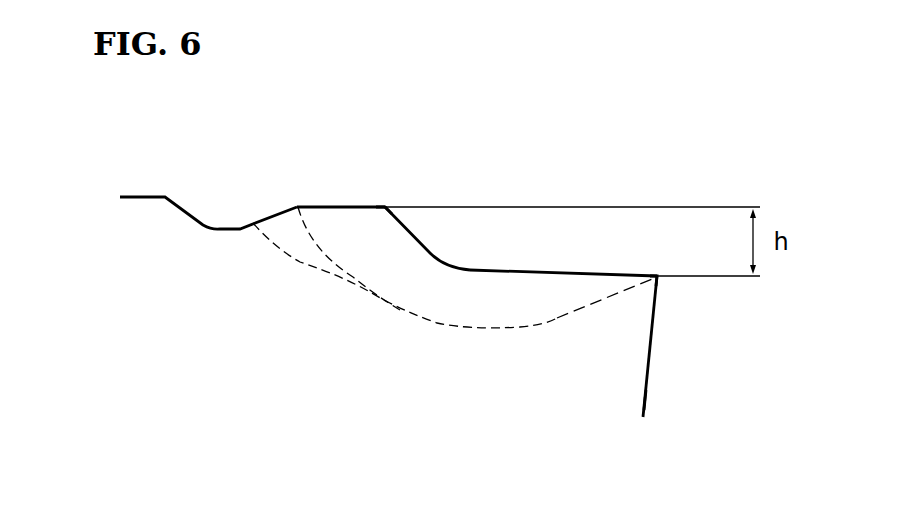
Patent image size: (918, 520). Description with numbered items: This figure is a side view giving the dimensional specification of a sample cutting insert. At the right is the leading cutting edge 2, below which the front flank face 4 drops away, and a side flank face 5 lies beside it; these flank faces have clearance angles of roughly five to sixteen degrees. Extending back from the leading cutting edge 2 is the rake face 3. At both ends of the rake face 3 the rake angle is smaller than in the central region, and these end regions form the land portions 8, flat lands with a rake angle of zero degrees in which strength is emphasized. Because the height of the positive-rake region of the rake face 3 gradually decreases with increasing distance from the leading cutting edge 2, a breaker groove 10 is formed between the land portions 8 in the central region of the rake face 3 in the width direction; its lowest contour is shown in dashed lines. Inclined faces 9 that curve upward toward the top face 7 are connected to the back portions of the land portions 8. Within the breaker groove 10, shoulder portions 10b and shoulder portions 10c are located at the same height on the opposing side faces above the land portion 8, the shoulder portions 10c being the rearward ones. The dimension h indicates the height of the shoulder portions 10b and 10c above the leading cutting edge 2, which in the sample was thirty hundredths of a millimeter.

The leading cutting edge 2 is at (657, 276).
The rake face 3 is at (558, 318).
The front flank face 4 is at (655, 323).
The side flank faces 5 is at (623, 372).
The top face 7 is at (343, 206).
The land portions 8 is at (615, 273).
The inclined faces 9 is at (428, 248).
The breaker groove 10 is at (443, 322).
The shoulder portions 10b is at (387, 203).
The shoulder portions 10c is at (298, 207).